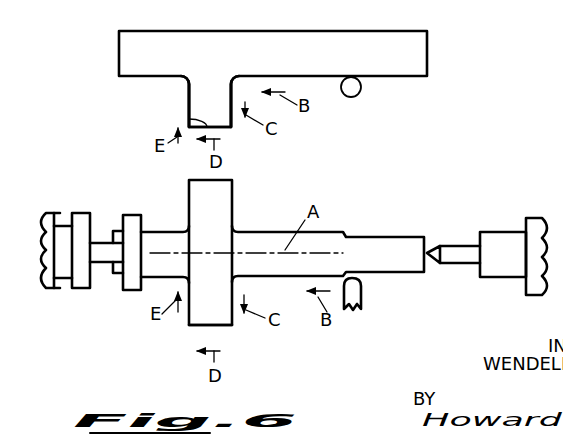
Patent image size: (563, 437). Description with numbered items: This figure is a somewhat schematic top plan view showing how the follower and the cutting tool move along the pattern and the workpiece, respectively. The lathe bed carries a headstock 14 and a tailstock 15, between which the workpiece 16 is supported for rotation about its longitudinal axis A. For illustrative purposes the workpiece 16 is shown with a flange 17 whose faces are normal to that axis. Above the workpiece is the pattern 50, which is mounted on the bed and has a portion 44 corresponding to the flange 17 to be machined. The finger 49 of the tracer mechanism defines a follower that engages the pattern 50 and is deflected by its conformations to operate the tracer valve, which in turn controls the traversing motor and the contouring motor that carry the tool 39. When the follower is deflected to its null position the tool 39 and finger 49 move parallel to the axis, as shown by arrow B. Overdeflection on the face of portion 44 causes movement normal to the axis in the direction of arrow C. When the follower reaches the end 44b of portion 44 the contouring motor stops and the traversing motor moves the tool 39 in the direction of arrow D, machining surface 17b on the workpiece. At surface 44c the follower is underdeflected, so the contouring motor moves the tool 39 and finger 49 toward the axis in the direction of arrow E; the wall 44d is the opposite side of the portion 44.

The headstock 14 is at (52, 212).
The tailstock 15 is at (530, 216).
The workpiece 16 is at (277, 228).
The flange 17 is at (232, 195).
The surface 17b is at (198, 325).
The tool 39 is at (363, 300).
The portion 44 is at (197, 102).
The end 44b is at (189, 119).
The surface 44c is at (189, 95).
The groove opposite wall 44d is at (231, 118).
The finger 49 is at (358, 95).
The pattern 50 is at (427, 38).